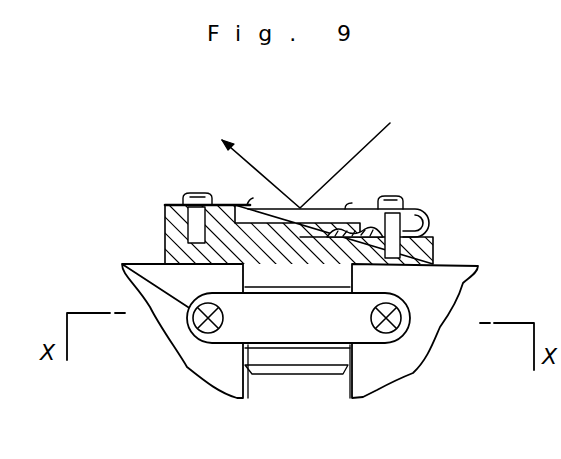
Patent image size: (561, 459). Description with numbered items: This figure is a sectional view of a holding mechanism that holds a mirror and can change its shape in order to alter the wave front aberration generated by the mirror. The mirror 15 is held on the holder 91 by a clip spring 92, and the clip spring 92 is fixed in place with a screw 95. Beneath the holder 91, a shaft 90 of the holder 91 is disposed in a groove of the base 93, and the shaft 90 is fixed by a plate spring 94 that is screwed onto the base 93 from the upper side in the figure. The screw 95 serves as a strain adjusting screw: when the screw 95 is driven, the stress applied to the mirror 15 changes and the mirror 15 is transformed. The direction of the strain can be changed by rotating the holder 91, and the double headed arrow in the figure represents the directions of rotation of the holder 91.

The mirror 15 is at (333, 218).
The screw 95 is at (400, 200).
The clip spring 92 is at (423, 207).
The holder 91 is at (442, 252).
The base 93 is at (388, 367).
The plate spring 94 is at (272, 330).
The shaft 90 is at (296, 352).